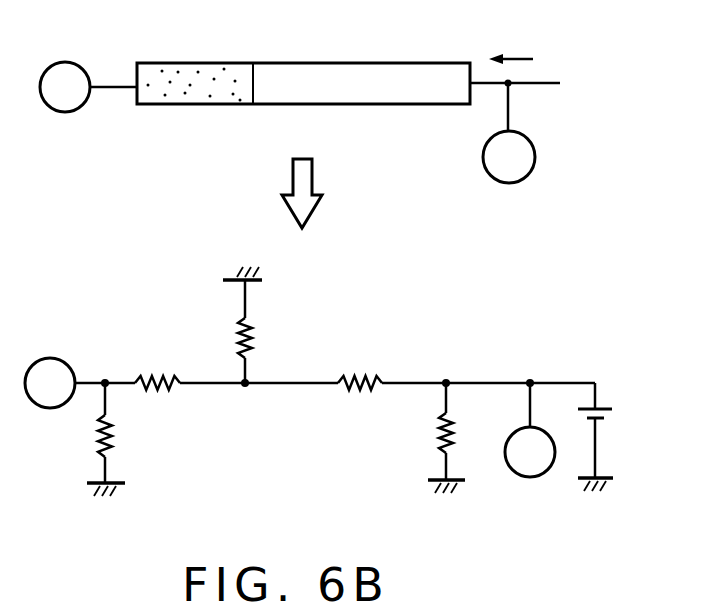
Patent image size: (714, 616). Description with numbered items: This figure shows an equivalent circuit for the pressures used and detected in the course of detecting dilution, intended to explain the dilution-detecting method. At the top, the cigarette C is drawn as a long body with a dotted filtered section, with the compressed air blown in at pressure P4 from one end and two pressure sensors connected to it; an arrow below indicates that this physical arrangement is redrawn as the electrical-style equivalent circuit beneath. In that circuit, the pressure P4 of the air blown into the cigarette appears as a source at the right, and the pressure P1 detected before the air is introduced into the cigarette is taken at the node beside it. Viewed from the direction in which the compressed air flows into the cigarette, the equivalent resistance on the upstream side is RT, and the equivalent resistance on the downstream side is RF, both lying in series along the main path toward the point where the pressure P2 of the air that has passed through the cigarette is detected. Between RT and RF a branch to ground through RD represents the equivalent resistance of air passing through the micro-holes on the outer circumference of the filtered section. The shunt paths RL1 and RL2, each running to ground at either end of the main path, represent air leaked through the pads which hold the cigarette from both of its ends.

The cable/conductor section C is at (348, 61).
The pressure of air detected after the air passed through the cigarette P2 is at (57, 235).
The pressure of air detected before the air is introduced into the cigarette P1 is at (519, 304).
The pressure of air blown into the cigarette P4 is at (566, 268).
The equivalent resistance on the down-stream side RF is at (157, 367).
The equivalent resistance of air passing through the micro-holes RD is at (260, 325).
The equivalent resistance on the upstream side RT is at (360, 366).
The pressure of air leaked through the pad RL1 is at (424, 438).
The pressure of air leaked through the pad RL2 is at (126, 439).